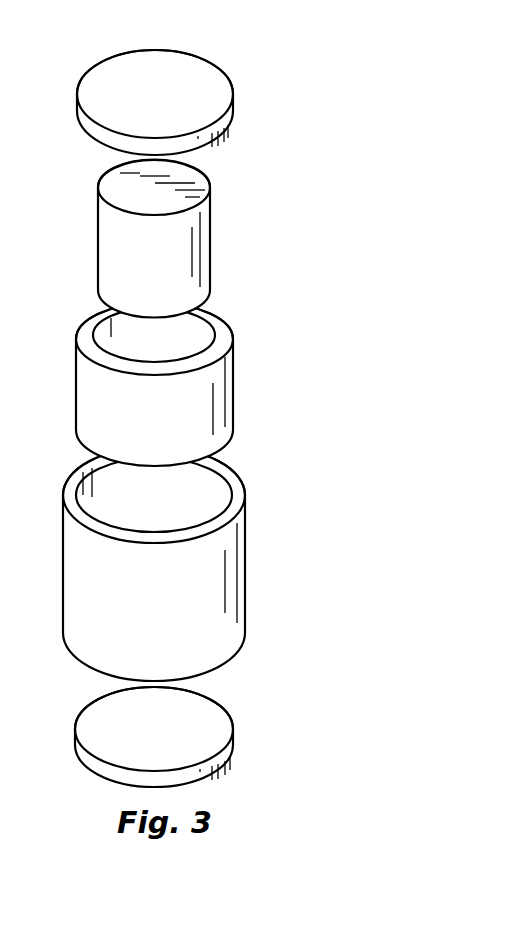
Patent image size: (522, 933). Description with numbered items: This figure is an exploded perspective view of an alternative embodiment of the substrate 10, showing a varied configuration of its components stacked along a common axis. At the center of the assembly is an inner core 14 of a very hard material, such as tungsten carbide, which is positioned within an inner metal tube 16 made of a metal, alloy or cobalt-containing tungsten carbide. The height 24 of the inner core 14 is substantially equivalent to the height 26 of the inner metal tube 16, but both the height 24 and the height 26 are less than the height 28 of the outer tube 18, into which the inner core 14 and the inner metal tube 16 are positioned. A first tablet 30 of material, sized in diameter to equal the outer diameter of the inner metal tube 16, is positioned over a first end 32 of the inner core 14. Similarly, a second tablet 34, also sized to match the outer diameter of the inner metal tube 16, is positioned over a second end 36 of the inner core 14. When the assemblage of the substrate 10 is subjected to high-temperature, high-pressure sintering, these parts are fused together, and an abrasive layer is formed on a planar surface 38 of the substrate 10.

The substrate 10 is at (278, 401).
The inner core 14 is at (185, 245).
The inner metal tube 16 is at (207, 375).
The outer tube 18 is at (230, 582).
The height of the inner core 24 is at (93, 188).
The height of the inner metal tube 26 is at (72, 328).
The height of the outer tube 28 is at (58, 502).
The first tablet 30 is at (223, 95).
The first end of the inner core 32 is at (216, 177).
The second tablet 34 is at (188, 725).
The second end of the inner core 36 is at (212, 302).
The planar surface 38 is at (183, 78).